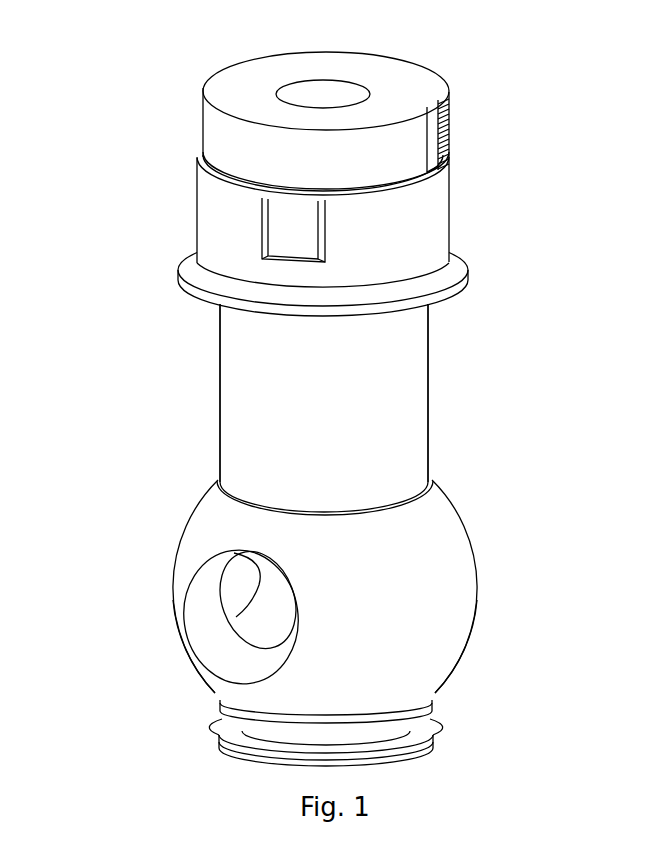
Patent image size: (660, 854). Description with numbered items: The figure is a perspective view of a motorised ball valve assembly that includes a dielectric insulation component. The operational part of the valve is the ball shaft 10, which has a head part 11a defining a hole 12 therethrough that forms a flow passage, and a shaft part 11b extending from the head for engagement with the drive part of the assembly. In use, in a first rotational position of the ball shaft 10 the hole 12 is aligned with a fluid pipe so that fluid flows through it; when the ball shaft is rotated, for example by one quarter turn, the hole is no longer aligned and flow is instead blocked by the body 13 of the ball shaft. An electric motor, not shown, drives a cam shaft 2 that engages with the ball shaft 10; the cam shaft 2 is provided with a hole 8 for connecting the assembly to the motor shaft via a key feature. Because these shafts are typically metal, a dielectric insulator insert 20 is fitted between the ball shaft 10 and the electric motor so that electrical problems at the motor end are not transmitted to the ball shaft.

The hole 8 is at (322, 91).
The cam shaft 2 is at (380, 225).
The dielectric insulator insert 20 is at (380, 304).
The ball shaft 10 is at (368, 422).
The shaft part 11b is at (220, 422).
The body 13 is at (405, 615).
The hole 12 is at (267, 613).
The head part 11a is at (447, 672).